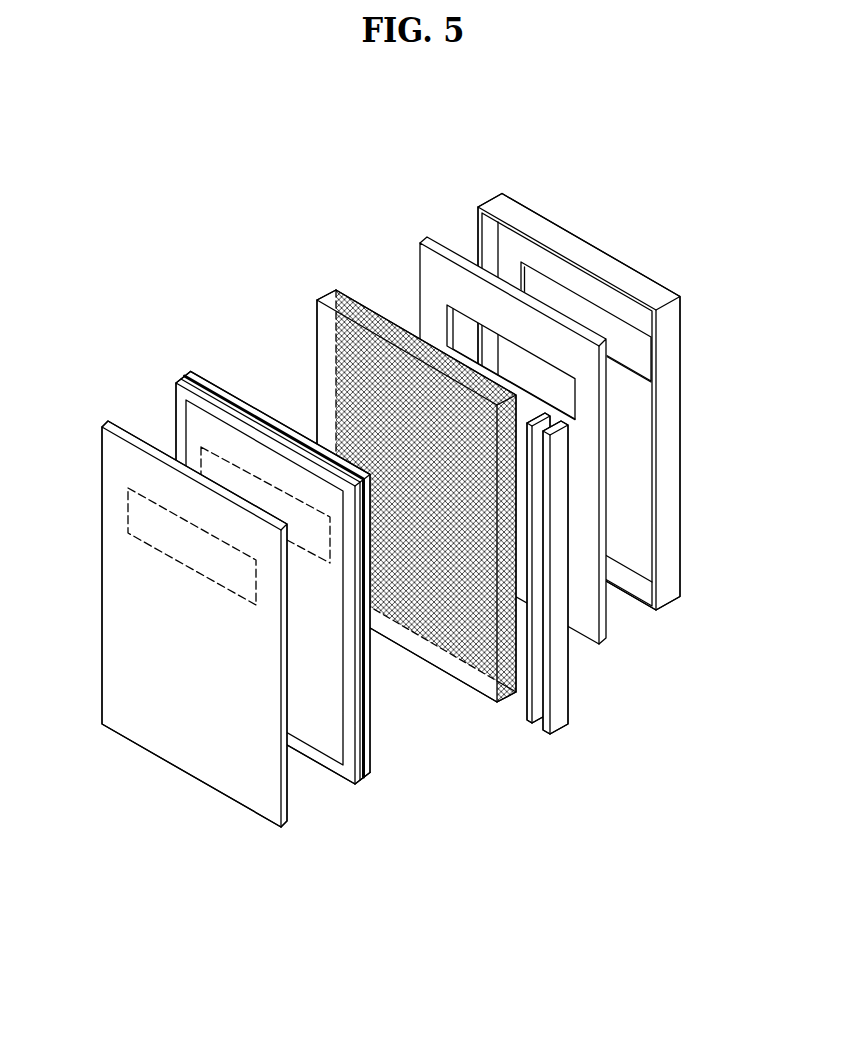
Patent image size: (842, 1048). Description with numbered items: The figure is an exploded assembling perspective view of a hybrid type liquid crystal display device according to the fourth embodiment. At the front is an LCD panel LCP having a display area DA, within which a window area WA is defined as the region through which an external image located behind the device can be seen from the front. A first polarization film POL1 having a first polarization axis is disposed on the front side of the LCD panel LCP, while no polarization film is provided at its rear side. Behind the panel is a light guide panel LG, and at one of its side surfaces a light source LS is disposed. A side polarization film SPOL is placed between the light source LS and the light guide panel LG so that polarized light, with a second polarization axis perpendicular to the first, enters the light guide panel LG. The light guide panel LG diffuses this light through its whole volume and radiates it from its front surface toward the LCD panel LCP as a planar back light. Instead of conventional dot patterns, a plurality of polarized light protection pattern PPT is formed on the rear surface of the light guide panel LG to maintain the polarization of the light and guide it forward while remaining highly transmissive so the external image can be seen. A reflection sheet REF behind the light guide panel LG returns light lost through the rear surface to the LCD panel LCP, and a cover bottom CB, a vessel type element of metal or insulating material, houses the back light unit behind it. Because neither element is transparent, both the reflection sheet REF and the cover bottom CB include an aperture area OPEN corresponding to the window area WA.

The cover bottom CB is at (665, 598).
The reflection sheet REF is at (602, 636).
The aperture area OPEN is at (518, 343).
The side polarization film SPOL is at (528, 721).
The light source LS is at (558, 724).
The light guide panel LG is at (401, 507).
The polarized light protection pattern PPT is at (357, 290).
The display area DA is at (321, 756).
The LCD panel LCP is at (367, 780).
The window area WA is at (217, 631).
The first polarization film POL1 is at (284, 823).